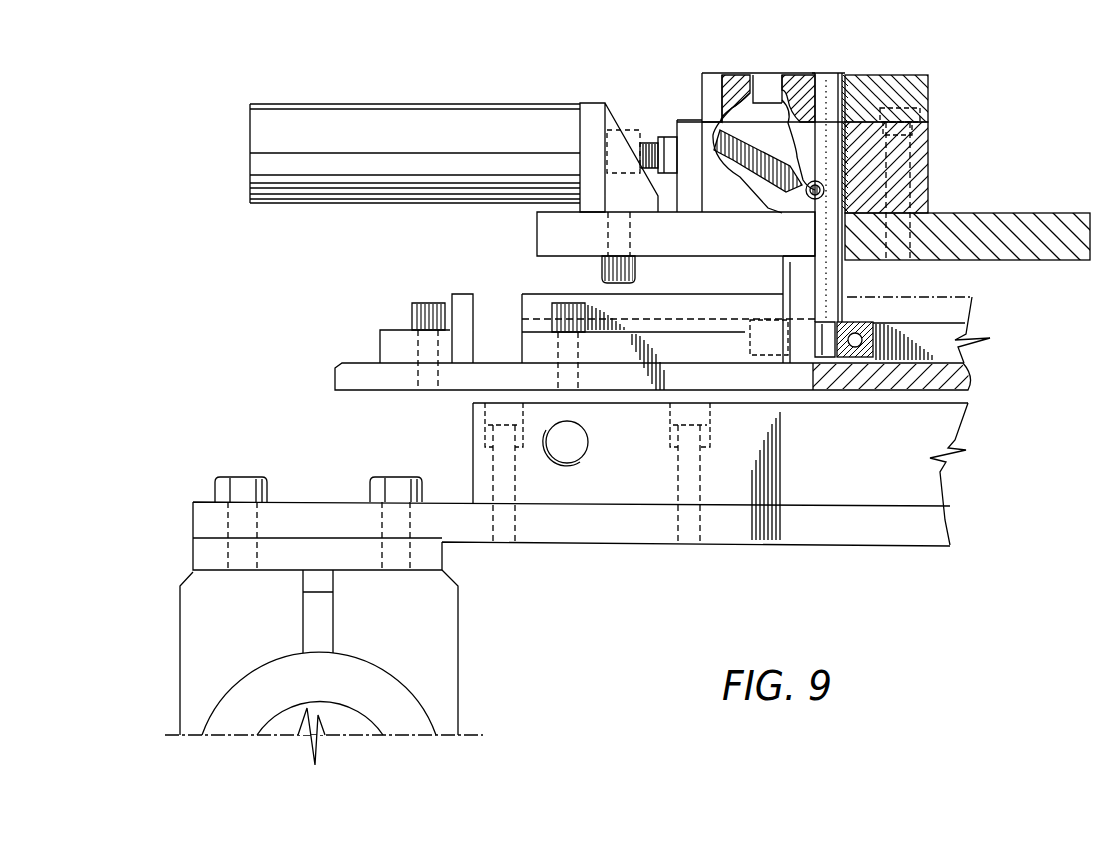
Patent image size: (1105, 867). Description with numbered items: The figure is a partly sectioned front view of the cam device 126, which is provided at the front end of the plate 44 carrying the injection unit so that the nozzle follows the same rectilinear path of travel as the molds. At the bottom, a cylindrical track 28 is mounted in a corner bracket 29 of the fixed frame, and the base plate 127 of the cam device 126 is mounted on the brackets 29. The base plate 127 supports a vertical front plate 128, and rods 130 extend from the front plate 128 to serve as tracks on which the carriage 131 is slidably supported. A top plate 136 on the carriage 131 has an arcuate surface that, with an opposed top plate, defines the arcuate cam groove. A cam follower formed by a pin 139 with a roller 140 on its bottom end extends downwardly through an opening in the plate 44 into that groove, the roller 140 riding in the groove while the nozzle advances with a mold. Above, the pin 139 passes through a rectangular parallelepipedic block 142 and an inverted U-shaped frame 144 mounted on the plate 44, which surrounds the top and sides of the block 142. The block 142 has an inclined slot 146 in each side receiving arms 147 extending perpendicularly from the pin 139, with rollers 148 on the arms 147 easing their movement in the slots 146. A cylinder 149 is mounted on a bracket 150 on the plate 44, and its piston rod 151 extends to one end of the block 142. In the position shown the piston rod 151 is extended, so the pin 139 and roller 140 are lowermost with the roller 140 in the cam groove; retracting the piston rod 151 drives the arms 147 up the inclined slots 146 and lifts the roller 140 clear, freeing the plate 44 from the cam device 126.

The cylinder 149 is at (348, 120).
The bracket 150 is at (592, 124).
The piston rod 151 is at (653, 140).
The inclined slot 146 is at (725, 135).
The arm 147 is at (766, 106).
The roller 148 is at (811, 200).
The pin 139 is at (843, 288).
The inverted U-shaped frame 144 is at (928, 102).
The block 142 is at (921, 165).
The plate 44 is at (1015, 223).
The cam device 126 is at (962, 192).
The top plate 136 is at (528, 297).
The roller 140 is at (873, 325).
The carriage 131 is at (341, 368).
The vertical front plate 128 is at (884, 498).
The rod 130 is at (583, 442).
The base plate 127 is at (586, 532).
The corner bracket 29 is at (192, 610).
The cylindrical track 28 is at (340, 712).